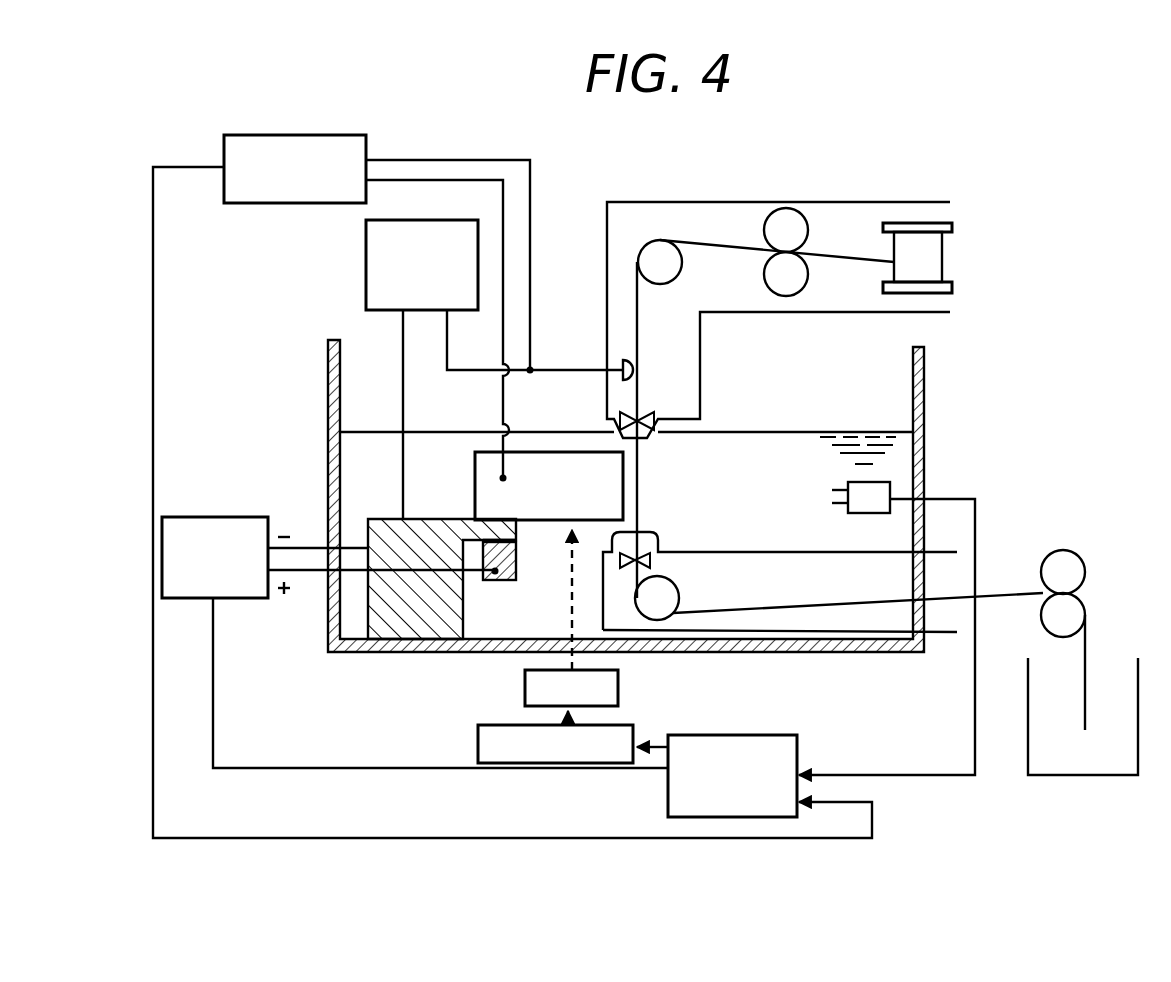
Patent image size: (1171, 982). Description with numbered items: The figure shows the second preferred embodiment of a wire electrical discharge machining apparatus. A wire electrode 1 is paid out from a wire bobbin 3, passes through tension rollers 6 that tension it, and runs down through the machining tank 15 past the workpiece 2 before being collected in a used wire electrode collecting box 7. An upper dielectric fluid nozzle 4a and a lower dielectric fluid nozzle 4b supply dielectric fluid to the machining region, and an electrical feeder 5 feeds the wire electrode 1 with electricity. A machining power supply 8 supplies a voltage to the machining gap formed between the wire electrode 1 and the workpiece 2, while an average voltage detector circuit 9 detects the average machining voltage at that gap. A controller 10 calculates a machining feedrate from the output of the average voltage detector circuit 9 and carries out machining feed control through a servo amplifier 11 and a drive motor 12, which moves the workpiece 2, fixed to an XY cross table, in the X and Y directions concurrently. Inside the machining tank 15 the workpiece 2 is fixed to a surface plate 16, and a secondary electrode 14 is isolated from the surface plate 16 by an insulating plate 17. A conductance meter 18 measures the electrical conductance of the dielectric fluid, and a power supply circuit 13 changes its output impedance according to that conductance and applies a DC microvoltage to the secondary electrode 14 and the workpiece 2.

The wire electrode 1 is at (636, 318).
The workpiece 2 is at (475, 482).
The wire bobbin 3 is at (943, 247).
The upper dielectric fluid nozzle 4a is at (653, 440).
The lower dielectric fluid nozzle 4b is at (653, 537).
The electrical feeder 5 is at (652, 413).
The tension rollers 6 is at (764, 278).
The used wire electrode collecting box 7 is at (1053, 780).
The machining power supply 8 is at (366, 292).
The average voltage detector circuit 9 is at (355, 135).
The controller 10 is at (775, 735).
The servo amplifier 11 is at (625, 725).
The drive motor 12 is at (618, 688).
The power supply circuit 13 is at (255, 517).
The secondary electrode 14 is at (507, 580).
The machining tank 15 is at (926, 387).
The surface plate 16 is at (418, 640).
The insulating plate 17 is at (515, 543).
The conductance meter 18 is at (890, 482).